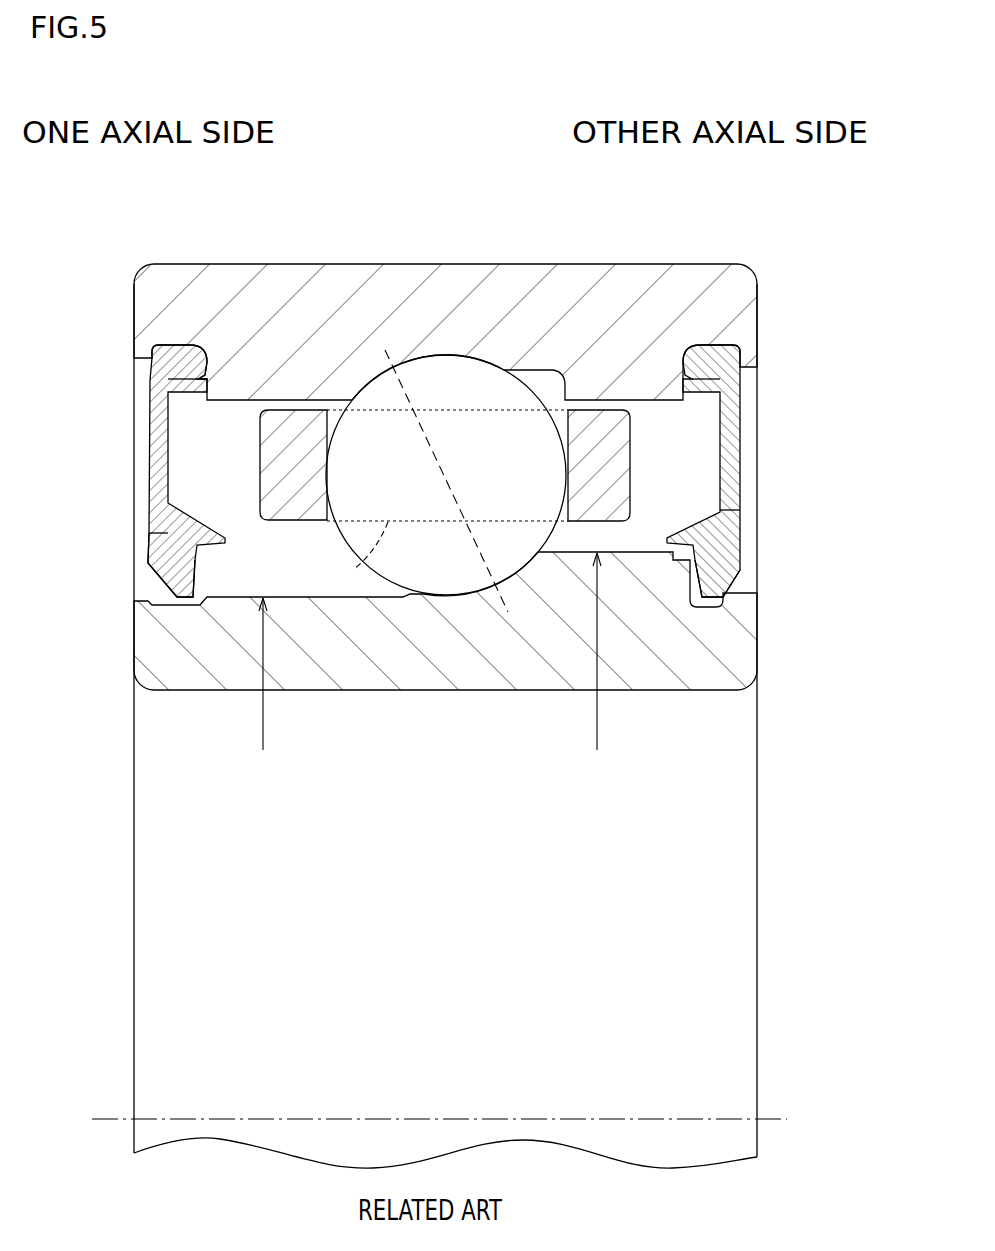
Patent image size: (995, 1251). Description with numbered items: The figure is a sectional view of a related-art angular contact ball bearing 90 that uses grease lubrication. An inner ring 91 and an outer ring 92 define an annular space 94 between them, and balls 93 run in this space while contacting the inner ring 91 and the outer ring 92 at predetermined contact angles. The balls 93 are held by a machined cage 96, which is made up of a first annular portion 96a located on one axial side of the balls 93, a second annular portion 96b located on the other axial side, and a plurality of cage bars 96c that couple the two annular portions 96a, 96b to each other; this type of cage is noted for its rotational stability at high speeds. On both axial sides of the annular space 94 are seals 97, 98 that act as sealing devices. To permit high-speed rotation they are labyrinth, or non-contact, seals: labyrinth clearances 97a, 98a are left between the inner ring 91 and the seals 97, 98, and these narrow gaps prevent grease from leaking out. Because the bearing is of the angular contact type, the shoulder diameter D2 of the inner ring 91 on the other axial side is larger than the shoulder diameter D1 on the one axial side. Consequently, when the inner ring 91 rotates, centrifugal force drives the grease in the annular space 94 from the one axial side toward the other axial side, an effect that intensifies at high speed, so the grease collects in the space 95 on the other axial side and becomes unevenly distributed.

The angular contact ball bearing 90 is at (713, 265).
The inner ring 91 is at (535, 692).
The outer ring 92 is at (597, 265).
The balls 93 is at (430, 388).
The annular space 94 is at (688, 429).
The space on the other axial side 95 is at (690, 484).
The cage 96 is at (448, 407).
The first annular portion 96a is at (277, 437).
The second annular portion 96b is at (615, 437).
The cage bars 96c is at (352, 585).
The seal 97 is at (140, 471).
The labyrinth clearance 97a is at (156, 584).
The seal 98 is at (752, 471).
The labyrinth clearance 98a is at (735, 584).
The shoulder diameter on one axial side D1 is at (280, 675).
The shoulder diameter on the other axial side D2 is at (614, 653).